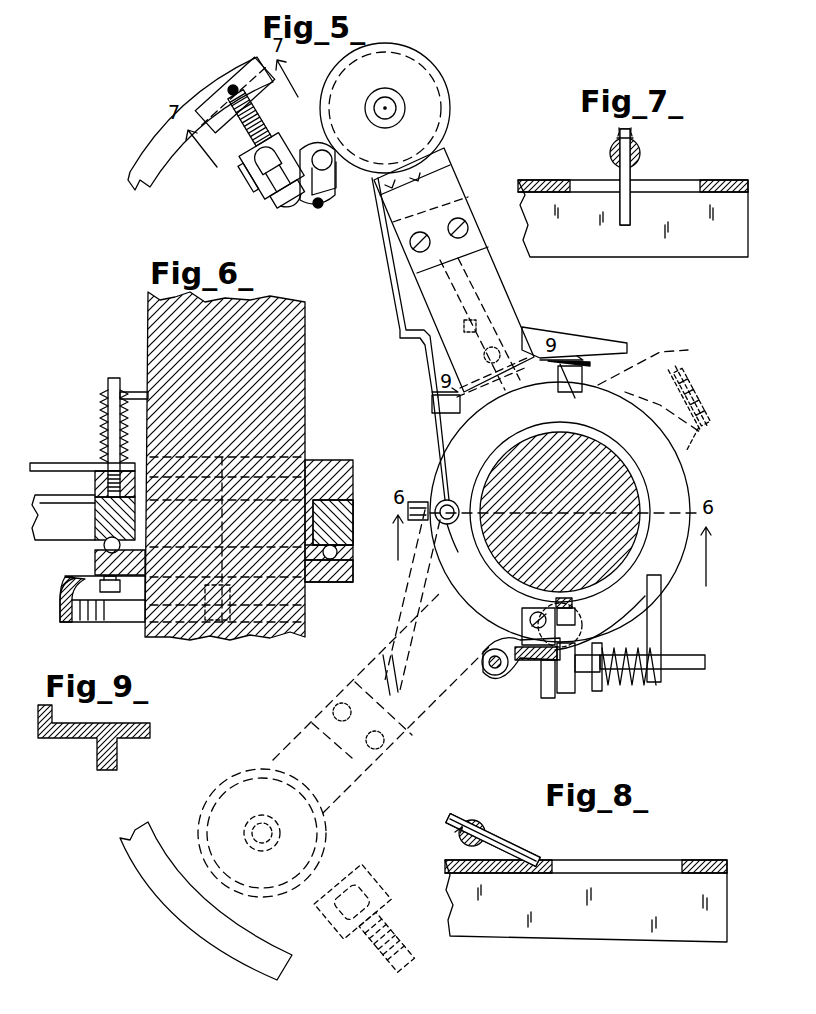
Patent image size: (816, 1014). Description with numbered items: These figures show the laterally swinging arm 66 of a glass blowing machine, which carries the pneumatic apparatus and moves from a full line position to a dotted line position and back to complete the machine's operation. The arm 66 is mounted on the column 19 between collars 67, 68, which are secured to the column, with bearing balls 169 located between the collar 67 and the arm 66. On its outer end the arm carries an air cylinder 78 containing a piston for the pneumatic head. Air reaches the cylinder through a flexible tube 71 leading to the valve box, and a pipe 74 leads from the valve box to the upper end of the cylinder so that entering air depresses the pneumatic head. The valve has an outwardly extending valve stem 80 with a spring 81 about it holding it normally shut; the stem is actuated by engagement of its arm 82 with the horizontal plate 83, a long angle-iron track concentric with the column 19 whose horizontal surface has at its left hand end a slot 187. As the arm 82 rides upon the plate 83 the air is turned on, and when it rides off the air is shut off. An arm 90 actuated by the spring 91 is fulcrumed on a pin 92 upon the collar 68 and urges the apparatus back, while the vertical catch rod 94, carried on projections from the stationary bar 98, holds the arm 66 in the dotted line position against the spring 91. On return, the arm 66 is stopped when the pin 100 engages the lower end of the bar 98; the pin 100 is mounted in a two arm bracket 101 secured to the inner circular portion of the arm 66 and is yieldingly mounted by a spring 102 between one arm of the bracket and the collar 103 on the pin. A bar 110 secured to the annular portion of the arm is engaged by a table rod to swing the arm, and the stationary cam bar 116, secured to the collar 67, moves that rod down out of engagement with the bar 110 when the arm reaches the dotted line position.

In FIG. 5, the column 19 is at (615, 522).
In FIG. 6, the column 19 is at (284, 388).
In FIG. 5, the laterally swinging arm 66 is at (496, 292).
In FIG. 9, the laterally swinging arm 66 is at (58, 730).
In FIG. 6, the collar 67 is at (346, 578).
In FIG. 5, the collar 68 is at (565, 512).
In FIG. 5, the flexible tube 71 is at (325, 200).
In FIG. 5, the pipe 74 is at (332, 176).
In FIG. 5, the air cylinder 78 is at (430, 108).
In FIG. 7, the valve stem 80 is at (641, 158).
In FIG. 8, the valve stem 80 is at (476, 821).
In FIG. 7, the spring 81 is at (618, 137).
In FIG. 8, the spring 81 is at (456, 831).
In FIG. 5, the arm 82 is at (231, 85).
In FIG. 7, the arm 82 is at (631, 214).
In FIG. 8, the arm 82 is at (595, 826).
In FIG. 7, the plate 83 is at (716, 182).
In FIG. 8, the plate 83 is at (510, 928).
In FIG. 5, the arm 90 is at (400, 302).
In FIG. 6, the arm 90 is at (82, 479).
In FIG. 5, the spring 91 is at (446, 458).
In FIG. 6, the spring 91 is at (68, 462).
In FIG. 5, the pin 92 is at (449, 524).
In FIG. 6, the pin 92 is at (108, 430).
In FIG. 5, the catch rod 94 is at (493, 676).
In FIG. 5, the bar 98 is at (541, 690).
In FIG. 5, the pin 100 is at (680, 670).
In FIG. 5, the two arm bracket 101 is at (661, 632).
In FIG. 5, the spring 102 is at (626, 688).
In FIG. 5, the collar 103 is at (597, 692).
In FIG. 5, the bar 110 is at (604, 342).
In FIG. 6, the cam bar 116 is at (65, 612).
In FIG. 6, the bearing balls 169 is at (338, 553).
In FIG. 5, the slot 187 is at (240, 85).
In FIG. 7, the slot 187 is at (681, 189).
In FIG. 8, the slot 187 is at (626, 868).